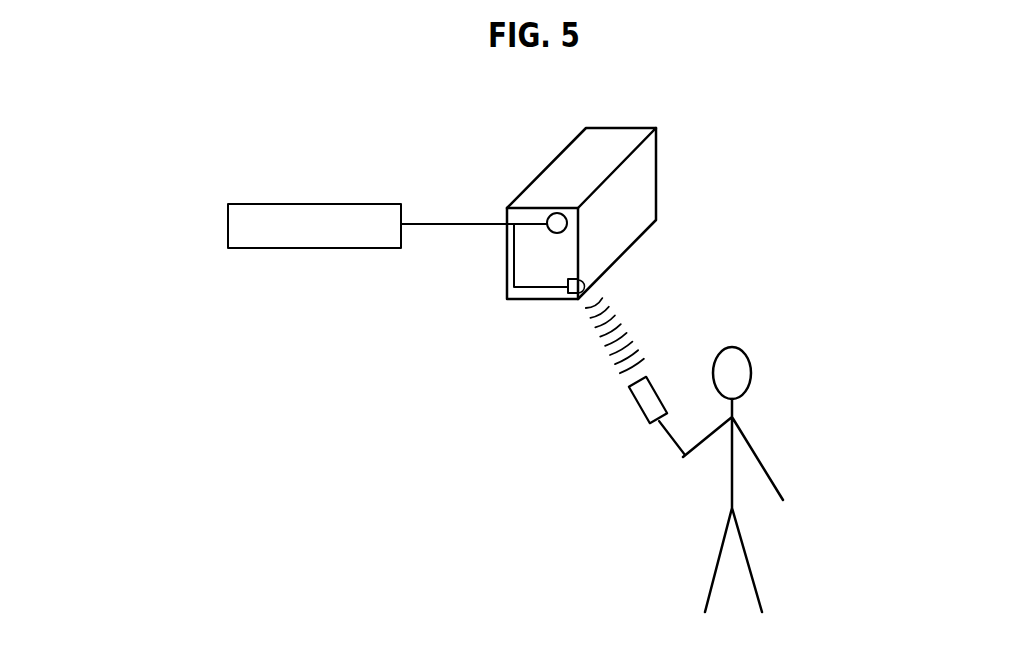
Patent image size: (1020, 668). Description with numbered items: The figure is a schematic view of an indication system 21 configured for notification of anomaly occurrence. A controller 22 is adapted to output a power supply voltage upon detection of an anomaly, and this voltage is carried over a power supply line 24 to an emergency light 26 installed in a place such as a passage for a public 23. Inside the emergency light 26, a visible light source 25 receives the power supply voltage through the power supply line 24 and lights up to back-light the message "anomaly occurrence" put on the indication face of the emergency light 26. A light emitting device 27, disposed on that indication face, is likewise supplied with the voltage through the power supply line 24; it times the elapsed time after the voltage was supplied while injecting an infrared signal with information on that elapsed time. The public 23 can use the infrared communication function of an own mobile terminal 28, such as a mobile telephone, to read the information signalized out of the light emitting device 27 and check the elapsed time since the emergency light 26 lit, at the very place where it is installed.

The indication system 21 is at (712, 157).
The controller 22 is at (227, 222).
The public 23 is at (750, 374).
The power supply line 24 is at (453, 228).
The visible light source 25 is at (549, 214).
The emergency light 26 is at (596, 127).
The light emitting device 27 is at (575, 298).
The mobile terminal 28 is at (641, 411).